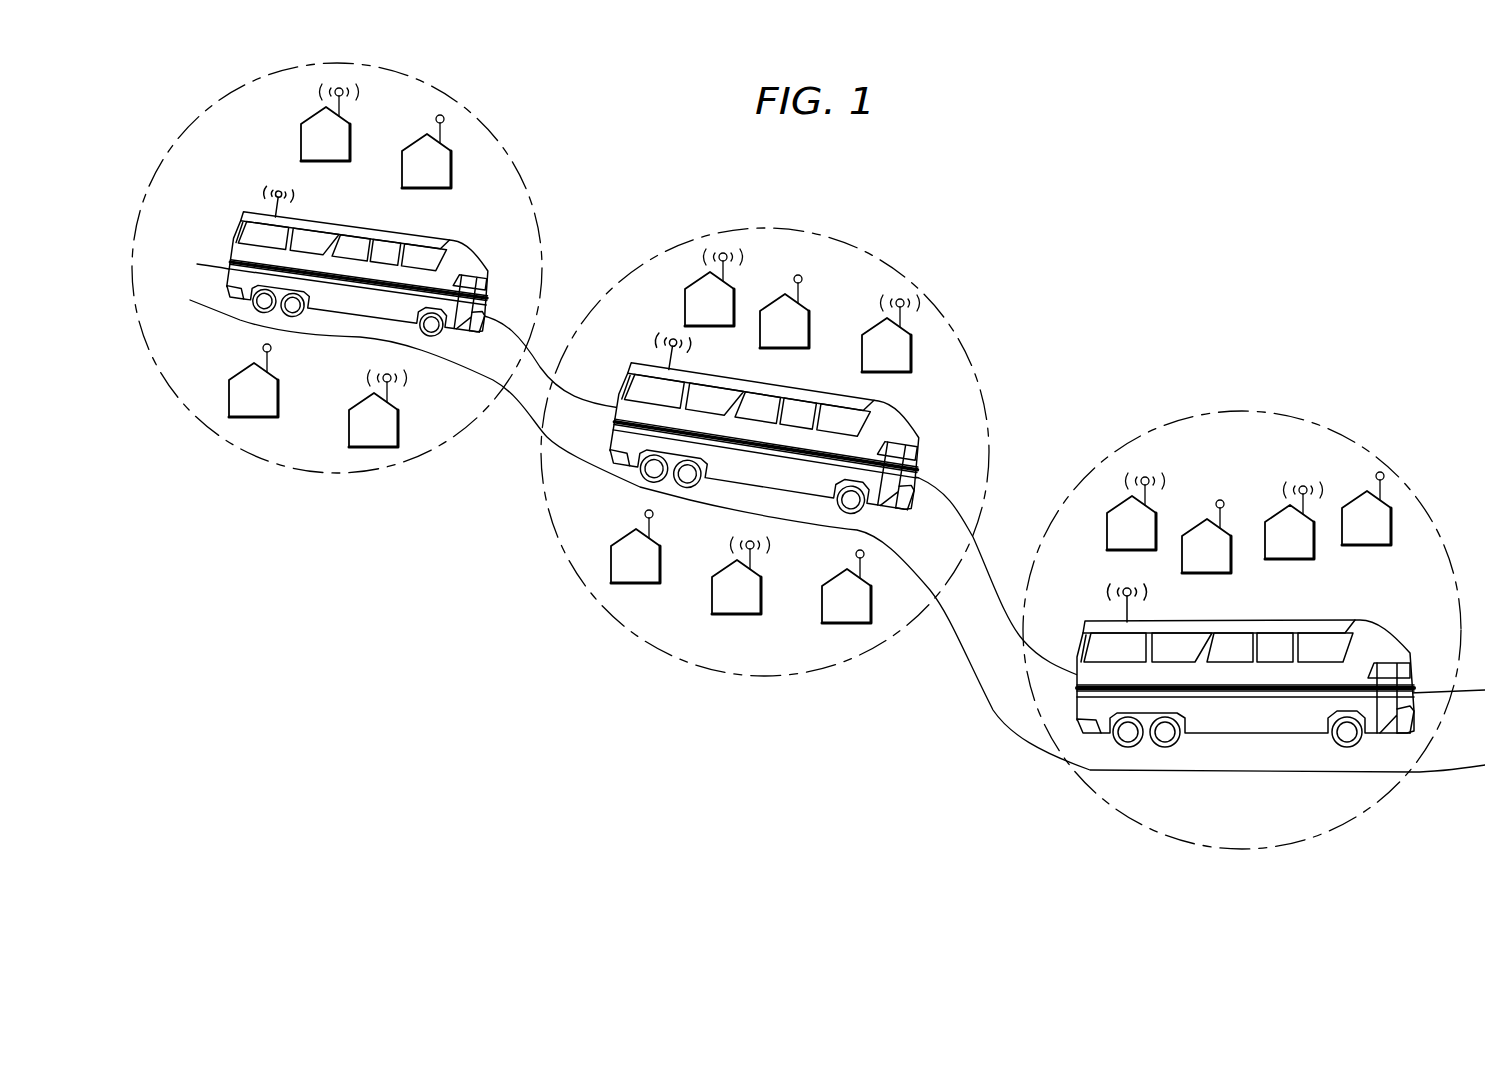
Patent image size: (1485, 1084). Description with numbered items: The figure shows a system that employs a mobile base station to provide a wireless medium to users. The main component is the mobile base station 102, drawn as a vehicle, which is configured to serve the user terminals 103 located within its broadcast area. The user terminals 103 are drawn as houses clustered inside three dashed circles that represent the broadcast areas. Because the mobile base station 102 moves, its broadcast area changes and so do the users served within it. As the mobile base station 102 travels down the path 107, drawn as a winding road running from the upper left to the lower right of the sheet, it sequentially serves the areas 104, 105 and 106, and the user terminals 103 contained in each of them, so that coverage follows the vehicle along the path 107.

The mobile base station 102 is at (437, 238).
The user terminals 103 is at (451, 165).
The area 104 is at (206, 335).
The area 105 is at (609, 511).
The area 106 is at (1428, 596).
The path 107 is at (979, 681).